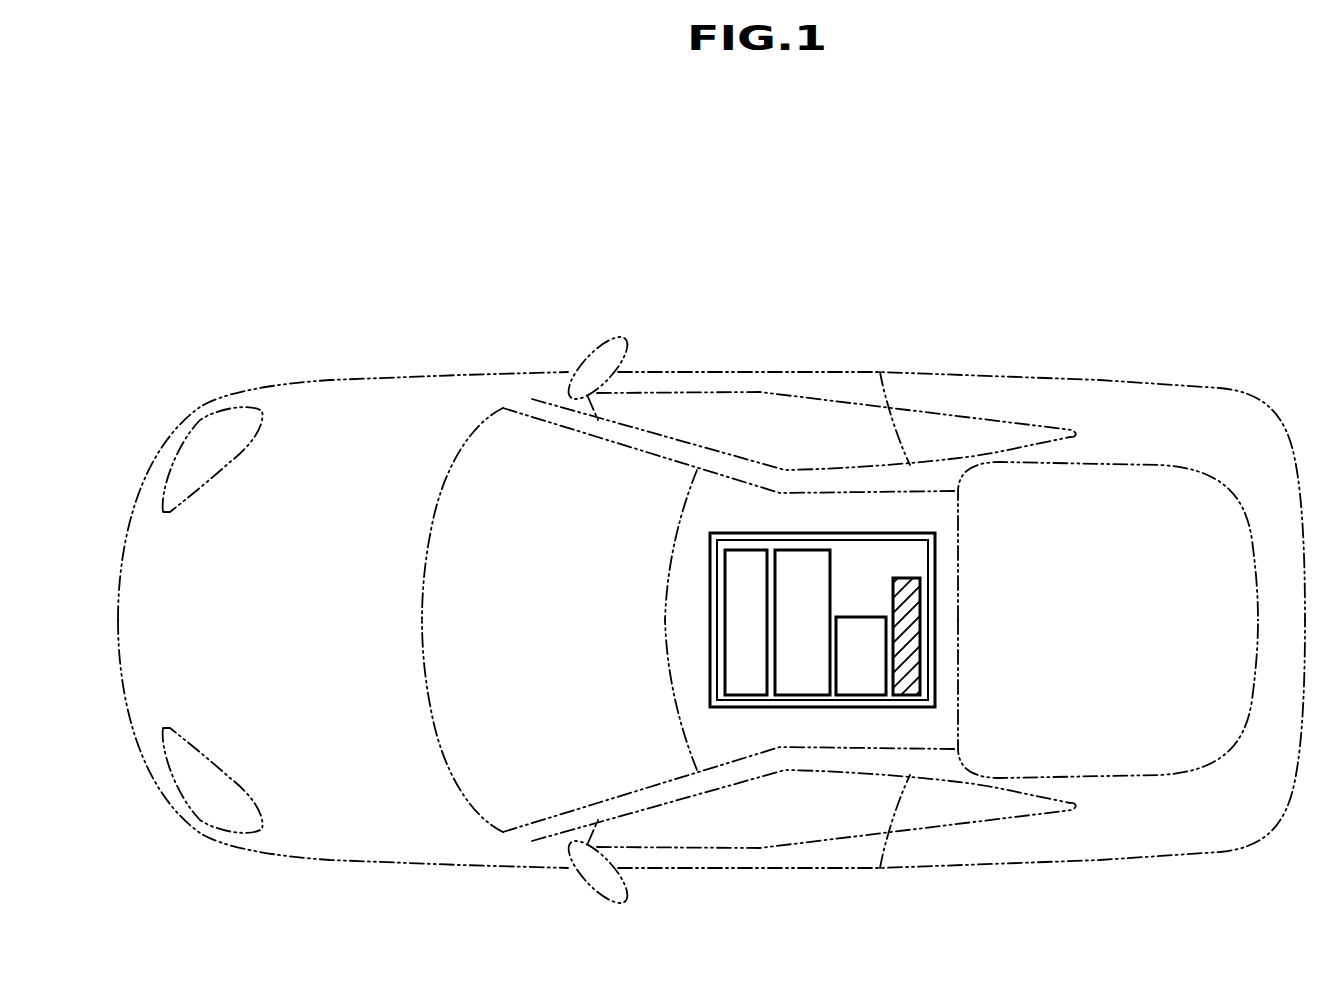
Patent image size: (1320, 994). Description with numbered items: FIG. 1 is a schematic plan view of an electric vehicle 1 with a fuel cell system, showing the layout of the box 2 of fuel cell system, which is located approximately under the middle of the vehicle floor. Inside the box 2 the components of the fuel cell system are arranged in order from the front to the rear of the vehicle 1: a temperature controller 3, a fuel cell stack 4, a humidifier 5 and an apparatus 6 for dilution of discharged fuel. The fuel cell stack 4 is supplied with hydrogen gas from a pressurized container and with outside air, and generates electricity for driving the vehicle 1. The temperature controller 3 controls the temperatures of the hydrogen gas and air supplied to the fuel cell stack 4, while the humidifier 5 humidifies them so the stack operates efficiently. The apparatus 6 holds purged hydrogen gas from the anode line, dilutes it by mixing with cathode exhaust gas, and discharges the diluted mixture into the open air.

The electric vehicle 1 is at (855, 315).
The box of fuel cell system 2 is at (817, 525).
The temperature controller 3 is at (750, 673).
The fuel cell stack 4 is at (808, 673).
The humidifier 5 is at (865, 673).
The apparatus for dilution of discharged fuel 6 is at (908, 590).